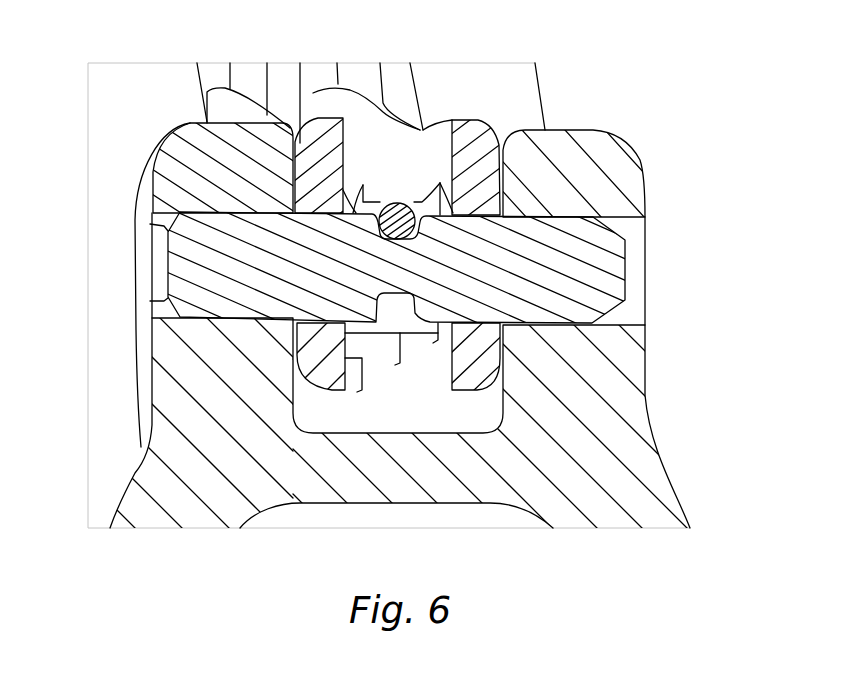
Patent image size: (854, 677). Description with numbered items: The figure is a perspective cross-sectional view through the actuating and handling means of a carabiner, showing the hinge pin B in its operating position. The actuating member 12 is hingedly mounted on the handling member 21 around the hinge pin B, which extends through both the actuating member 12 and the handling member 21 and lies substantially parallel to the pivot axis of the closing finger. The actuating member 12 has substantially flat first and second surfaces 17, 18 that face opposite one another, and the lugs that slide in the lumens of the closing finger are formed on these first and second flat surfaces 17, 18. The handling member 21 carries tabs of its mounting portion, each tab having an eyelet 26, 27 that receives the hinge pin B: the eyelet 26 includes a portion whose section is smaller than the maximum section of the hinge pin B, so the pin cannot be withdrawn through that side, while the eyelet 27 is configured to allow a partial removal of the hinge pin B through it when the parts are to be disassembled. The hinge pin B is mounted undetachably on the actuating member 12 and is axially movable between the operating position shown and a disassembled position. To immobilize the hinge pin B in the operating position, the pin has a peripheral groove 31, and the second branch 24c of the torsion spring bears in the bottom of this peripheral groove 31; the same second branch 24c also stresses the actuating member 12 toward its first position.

The actuating member 12 is at (470, 143).
The first flat surface 17 is at (289, 191).
The second flat surface 18 is at (506, 187).
The second branch of the torsion spring 24c is at (406, 200).
The hinge pin B is at (573, 250).
The handling member 21 is at (626, 492).
The eyelet 26 is at (258, 316).
The eyelet 27 is at (540, 320).
The peripheral groove 31 is at (394, 299).